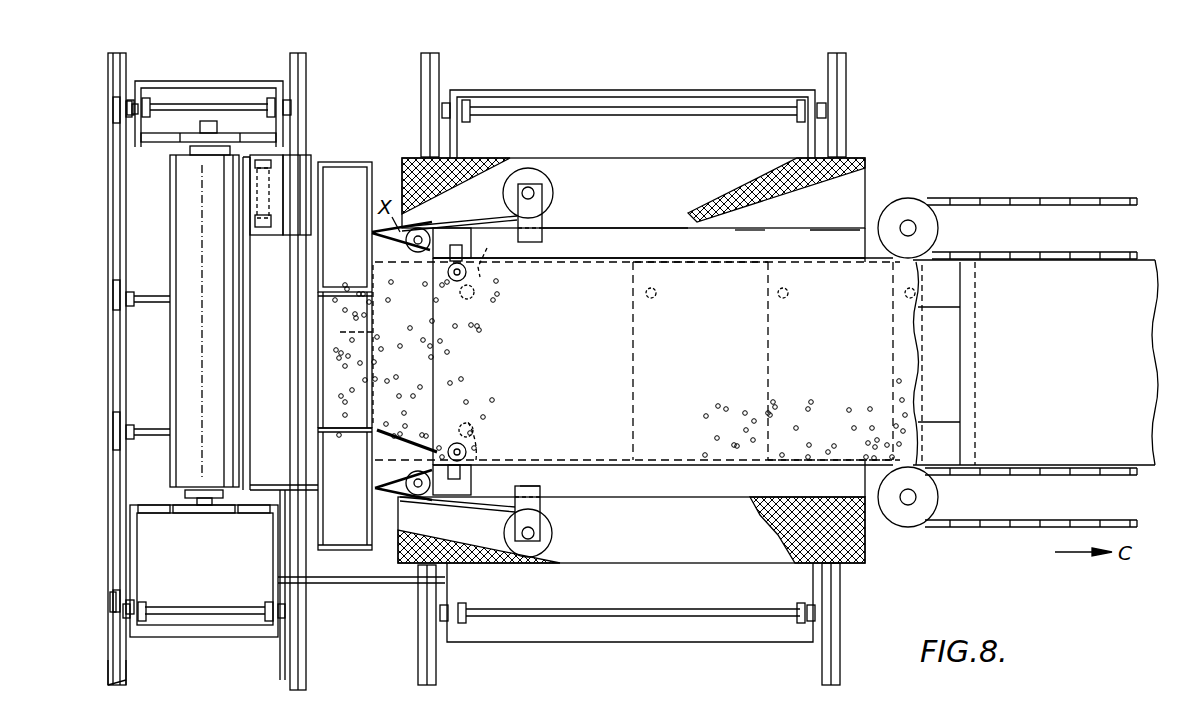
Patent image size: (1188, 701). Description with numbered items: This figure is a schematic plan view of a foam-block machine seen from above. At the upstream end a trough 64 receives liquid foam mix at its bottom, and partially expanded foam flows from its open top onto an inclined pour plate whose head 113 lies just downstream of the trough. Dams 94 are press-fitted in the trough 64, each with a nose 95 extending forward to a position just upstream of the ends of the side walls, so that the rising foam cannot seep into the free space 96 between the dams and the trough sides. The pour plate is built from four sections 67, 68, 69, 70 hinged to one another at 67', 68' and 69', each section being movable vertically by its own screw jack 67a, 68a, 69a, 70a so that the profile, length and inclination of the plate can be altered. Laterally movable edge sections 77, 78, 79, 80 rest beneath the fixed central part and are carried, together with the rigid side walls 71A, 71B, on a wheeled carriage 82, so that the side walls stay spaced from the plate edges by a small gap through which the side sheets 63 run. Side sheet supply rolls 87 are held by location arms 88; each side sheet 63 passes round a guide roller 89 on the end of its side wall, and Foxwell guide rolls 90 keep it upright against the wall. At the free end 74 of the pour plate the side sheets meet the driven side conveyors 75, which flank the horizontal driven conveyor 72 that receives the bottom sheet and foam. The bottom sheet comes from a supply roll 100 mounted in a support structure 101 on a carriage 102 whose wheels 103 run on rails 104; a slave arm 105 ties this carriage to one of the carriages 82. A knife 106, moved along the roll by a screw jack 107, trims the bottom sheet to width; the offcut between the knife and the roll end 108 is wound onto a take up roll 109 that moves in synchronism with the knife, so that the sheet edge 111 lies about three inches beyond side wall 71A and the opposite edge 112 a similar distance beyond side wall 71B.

The side sheet 63 is at (478, 222).
The trough 64 is at (318, 356).
The pour plate section 67 is at (486, 361).
The screw jack 67a is at (479, 365).
The hinged connection 67' is at (659, 361).
The pour plate section 68 is at (700, 327).
The screw jack 68a is at (657, 293).
The hinged connection 68' is at (797, 361).
The pour plate section 69 is at (830, 414).
The screw jack 69a is at (805, 293).
The hinged connection 69' is at (871, 361).
The pour plate section 70 is at (938, 380).
The screw jack 70a is at (916, 293).
The side wall 71A is at (722, 494).
The side wall 71B is at (703, 252).
The driven conveyor 72 is at (1088, 392).
The free end of pour plate 74 is at (962, 348).
The driven side conveyors 75 is at (1030, 198).
The pour plate edge section 77 is at (570, 262).
The pour plate edge section 78 is at (735, 268).
The pour plate edge section 79 is at (848, 266).
The pour plate edge section 80 is at (940, 268).
The carriage 82 is at (500, 642).
The side sheet supply roll 87 is at (546, 190).
The location arm 88 is at (540, 490).
The guide roller 89 is at (405, 500).
The Foxwell guide rolls 90 is at (420, 452).
The dams 94 is at (318, 428).
The nose 95 is at (355, 436).
The free space 96 is at (326, 552).
The supply roll 100 is at (178, 378).
The support structure 101 is at (203, 510).
The carriage 102 is at (192, 638).
The wheels 103 is at (110, 605).
The rails 104 is at (112, 640).
The slave arm 105 is at (390, 583).
The knife 106 is at (265, 235).
The screw jack 107 is at (240, 167).
The end of supply roll 108 is at (177, 148).
The take up roll 109 is at (300, 172).
The edge 111 is at (258, 490).
The edge 112 is at (320, 234).
The head of pour plate 113 is at (340, 330).